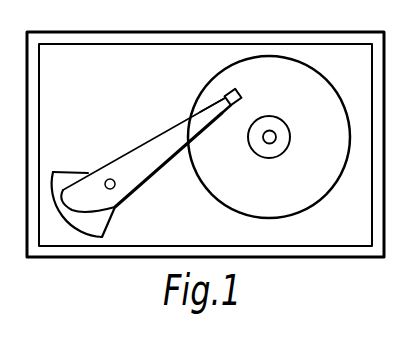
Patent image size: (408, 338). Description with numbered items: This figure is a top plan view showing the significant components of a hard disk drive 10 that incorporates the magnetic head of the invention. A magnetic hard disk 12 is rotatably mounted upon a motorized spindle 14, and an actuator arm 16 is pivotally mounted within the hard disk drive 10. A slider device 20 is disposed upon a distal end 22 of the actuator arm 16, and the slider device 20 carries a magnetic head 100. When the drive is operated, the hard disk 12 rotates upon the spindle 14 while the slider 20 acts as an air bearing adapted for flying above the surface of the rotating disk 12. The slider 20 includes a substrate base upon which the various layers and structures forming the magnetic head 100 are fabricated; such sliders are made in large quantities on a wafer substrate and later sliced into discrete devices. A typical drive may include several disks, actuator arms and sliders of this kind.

The hard disk drive 10 is at (385, 65).
The magnetic hard disk 12 is at (280, 198).
The motorized spindle 14 is at (288, 147).
The actuator arm 16 is at (146, 144).
The slider device 20 is at (224, 96).
The distal end 22 is at (228, 107).
The magnetic head 100 is at (242, 93).